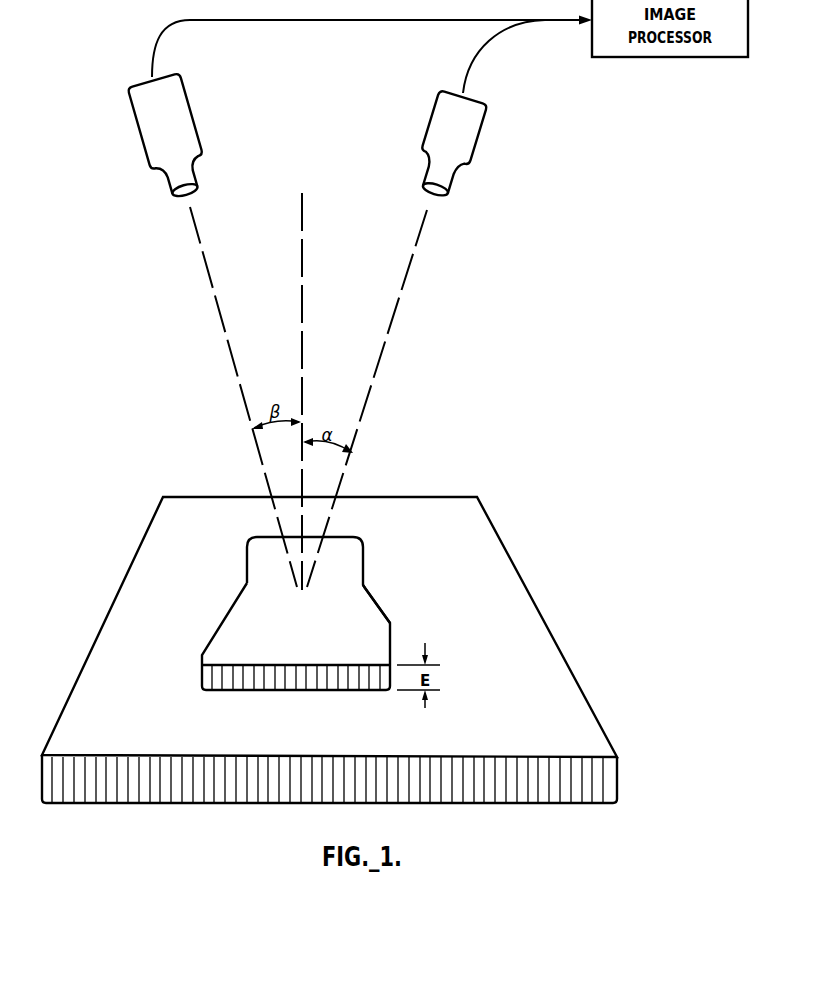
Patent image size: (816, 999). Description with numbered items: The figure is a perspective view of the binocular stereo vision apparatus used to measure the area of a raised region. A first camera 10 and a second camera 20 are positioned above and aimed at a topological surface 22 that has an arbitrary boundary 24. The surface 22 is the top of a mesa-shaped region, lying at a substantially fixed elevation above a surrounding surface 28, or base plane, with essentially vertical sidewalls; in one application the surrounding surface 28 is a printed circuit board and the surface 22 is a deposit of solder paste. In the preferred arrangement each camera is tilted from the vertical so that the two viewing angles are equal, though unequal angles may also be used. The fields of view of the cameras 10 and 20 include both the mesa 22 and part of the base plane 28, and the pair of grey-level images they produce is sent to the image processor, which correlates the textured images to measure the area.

The first camera 10 is at (478, 145).
The second camera 20 is at (198, 118).
The topological surface 22 is at (347, 550).
The arbitrary boundary 24 is at (365, 587).
The surrounding surface 28 is at (523, 640).